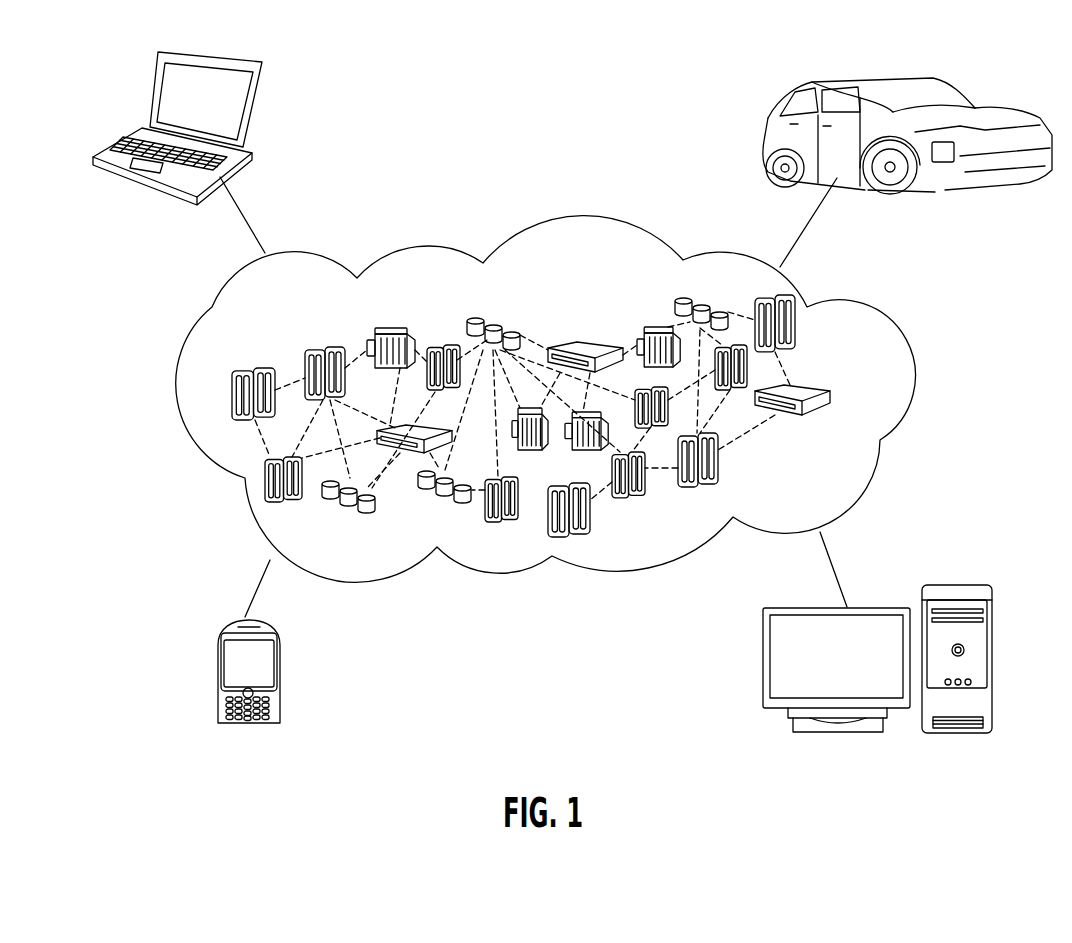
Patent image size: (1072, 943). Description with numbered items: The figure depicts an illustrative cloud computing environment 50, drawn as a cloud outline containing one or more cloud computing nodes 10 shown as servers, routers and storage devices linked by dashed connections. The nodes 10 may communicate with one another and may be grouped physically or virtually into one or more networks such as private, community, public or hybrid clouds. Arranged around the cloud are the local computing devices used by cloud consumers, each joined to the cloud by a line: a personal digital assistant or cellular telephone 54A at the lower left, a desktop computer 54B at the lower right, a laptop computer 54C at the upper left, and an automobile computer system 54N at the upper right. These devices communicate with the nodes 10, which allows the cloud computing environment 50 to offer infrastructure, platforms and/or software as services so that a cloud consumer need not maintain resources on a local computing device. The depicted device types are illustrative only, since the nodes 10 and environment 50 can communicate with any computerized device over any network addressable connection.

The cloud computing nodes 10 is at (872, 396).
The cloud computing environment 50 is at (888, 318).
The personal digital assistant (PDA) or cellular telephone 54A is at (222, 677).
The desktop computer 54B is at (962, 585).
The laptop computer 54C is at (255, 110).
The automobile computer system 54N is at (772, 122).